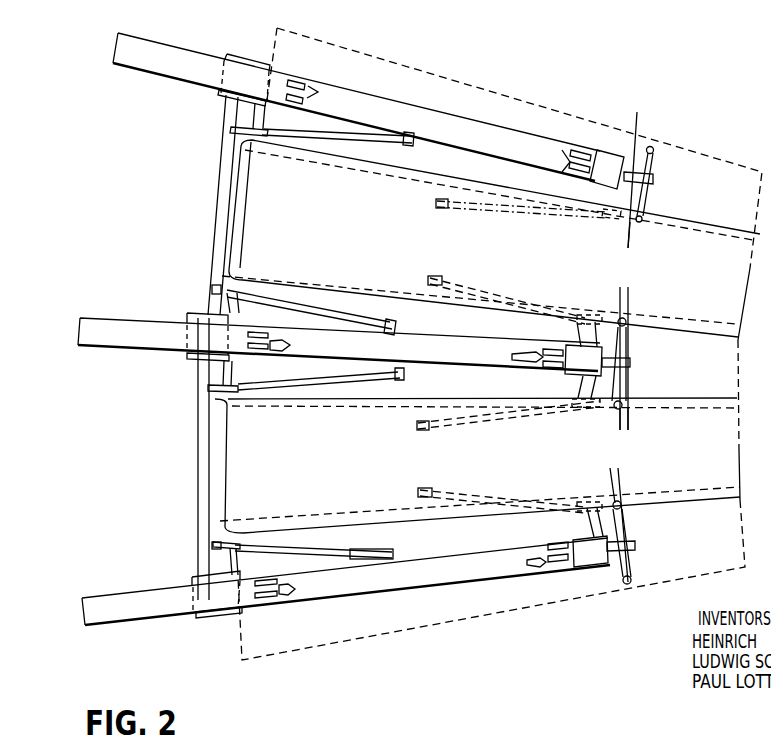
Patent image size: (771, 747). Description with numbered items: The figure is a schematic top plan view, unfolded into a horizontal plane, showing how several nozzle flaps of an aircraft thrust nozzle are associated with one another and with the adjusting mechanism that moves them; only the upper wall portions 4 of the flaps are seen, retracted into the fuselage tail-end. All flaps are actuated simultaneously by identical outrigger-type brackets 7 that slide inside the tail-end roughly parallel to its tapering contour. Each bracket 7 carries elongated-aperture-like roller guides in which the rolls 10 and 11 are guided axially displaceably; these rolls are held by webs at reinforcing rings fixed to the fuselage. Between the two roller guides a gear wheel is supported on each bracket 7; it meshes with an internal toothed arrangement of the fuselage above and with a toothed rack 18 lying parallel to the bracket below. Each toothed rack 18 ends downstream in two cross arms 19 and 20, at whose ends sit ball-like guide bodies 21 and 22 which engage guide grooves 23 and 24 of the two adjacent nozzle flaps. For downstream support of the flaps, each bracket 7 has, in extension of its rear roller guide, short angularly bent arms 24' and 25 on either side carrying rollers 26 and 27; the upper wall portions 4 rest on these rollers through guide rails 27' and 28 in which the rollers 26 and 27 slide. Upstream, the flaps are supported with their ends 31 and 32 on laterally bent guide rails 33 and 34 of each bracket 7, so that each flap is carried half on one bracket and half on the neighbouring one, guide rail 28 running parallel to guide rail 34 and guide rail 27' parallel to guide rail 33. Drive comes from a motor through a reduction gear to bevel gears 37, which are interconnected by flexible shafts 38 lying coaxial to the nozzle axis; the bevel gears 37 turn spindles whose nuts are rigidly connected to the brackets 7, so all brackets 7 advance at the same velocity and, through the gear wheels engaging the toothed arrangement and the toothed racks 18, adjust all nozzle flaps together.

The upper wall portion 4 is at (252, 203).
The outrigger-type bracket 7 is at (178, 53).
The roll 10 is at (314, 97).
The roll 11 is at (568, 152).
The toothed rack 18 is at (634, 128).
The cross arm 19 is at (647, 145).
The cross arm 20 is at (653, 194).
The ball-like guide body 21 is at (654, 148).
The ball-like guide body 22 is at (642, 222).
The guide groove 23 is at (638, 242).
The guide groove 24 is at (642, 432).
The short arm 24' is at (564, 431).
The short arm 25 is at (603, 190).
The roller 26 is at (590, 312).
The roller 27 is at (580, 323).
The guide rail 27' is at (474, 377).
The guide rail 28 is at (494, 210).
The upstream end 31 is at (235, 130).
The upstream end 32 is at (213, 288).
The guide rail 33 is at (355, 318).
The guide rail 34 is at (390, 146).
The bevel gear 37 is at (223, 97).
The flexible shaft 38 is at (210, 240).